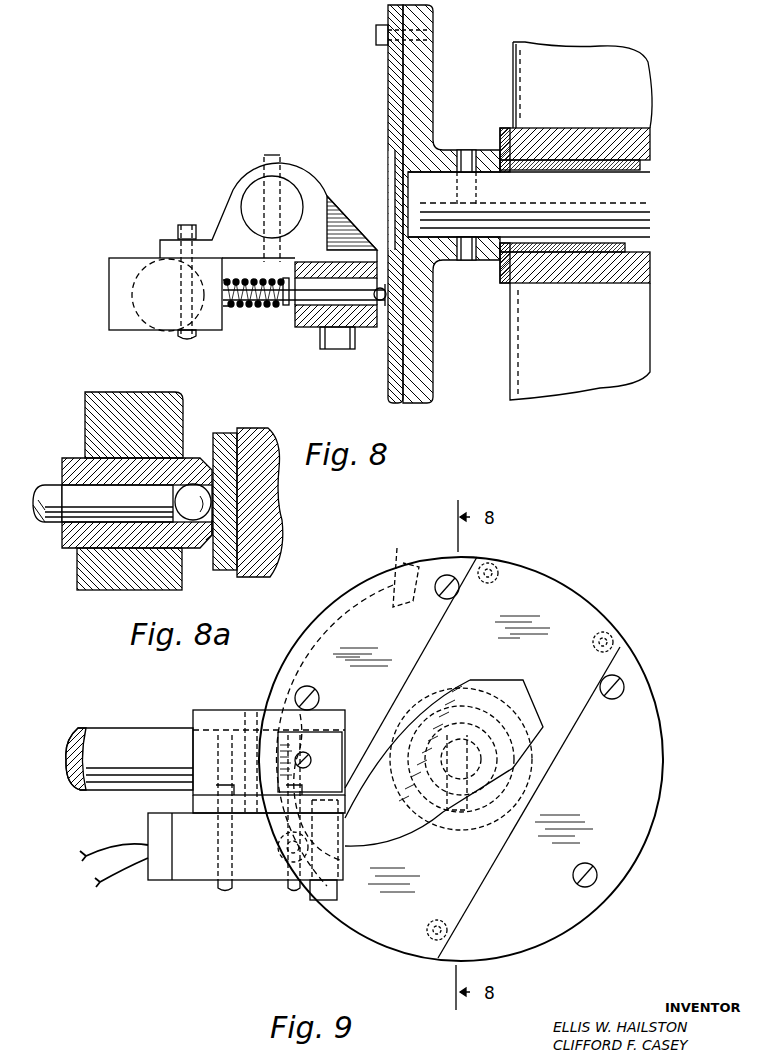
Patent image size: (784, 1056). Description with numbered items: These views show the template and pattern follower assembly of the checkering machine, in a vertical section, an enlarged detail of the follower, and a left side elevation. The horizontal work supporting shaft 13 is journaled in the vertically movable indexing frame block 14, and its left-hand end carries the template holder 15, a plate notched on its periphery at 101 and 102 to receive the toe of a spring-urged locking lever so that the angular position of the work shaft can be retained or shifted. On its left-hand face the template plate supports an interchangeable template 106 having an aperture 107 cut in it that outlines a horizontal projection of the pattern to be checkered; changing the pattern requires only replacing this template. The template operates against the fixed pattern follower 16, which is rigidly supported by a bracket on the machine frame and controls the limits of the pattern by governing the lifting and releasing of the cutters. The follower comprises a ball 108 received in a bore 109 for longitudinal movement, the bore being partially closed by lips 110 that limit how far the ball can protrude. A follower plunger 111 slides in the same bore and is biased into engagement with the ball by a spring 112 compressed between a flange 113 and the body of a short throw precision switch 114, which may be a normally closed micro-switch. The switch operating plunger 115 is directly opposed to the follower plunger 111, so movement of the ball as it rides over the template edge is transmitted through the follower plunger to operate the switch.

In FIG. 8, the shaft 13 is at (635, 197).
In FIG. 8, the indexing frame block 14 is at (648, 272).
In FIG. 8, the template holder 15 is at (425, 363).
In FIG. 8, the pattern follower 16 is at (243, 177).
In FIG. 9, the pattern follower 16 is at (141, 737).
In FIG. 9, the notch 101 is at (404, 567).
In FIG. 9, the notch 102 is at (272, 705).
In FIG. 8, the template 106 is at (388, 78).
In FIG. 8A, the template 106 is at (232, 435).
In FIG. 9, the template 106 is at (580, 618).
In FIG. 8, the aperture 107 is at (390, 190).
In FIG. 9, the aperture 107 is at (520, 704).
In FIG. 8, the ball 108 is at (384, 289).
In FIG. 8A, the ball 108 is at (192, 494).
In FIG. 8, the bore 109 is at (322, 318).
In FIG. 8A, the bore 109 is at (115, 455).
In FIG. 8, the lips 110 is at (383, 305).
In FIG. 8A, the lips 110 is at (208, 540).
In FIG. 8, the follower plunger 111 is at (290, 303).
In FIG. 8A, the follower plunger 111 is at (52, 522).
In FIG. 8, the spring 112 is at (240, 308).
In FIG. 8, the flange 113 is at (284, 284).
In FIG. 8, the precision switch 114 is at (135, 332).
In FIG. 9, the precision switch 114 is at (190, 872).
In FIG. 8, the switch operating plunger 115 is at (238, 286).
In FIG. 8A, the switch operating plunger 115 is at (276, 513).